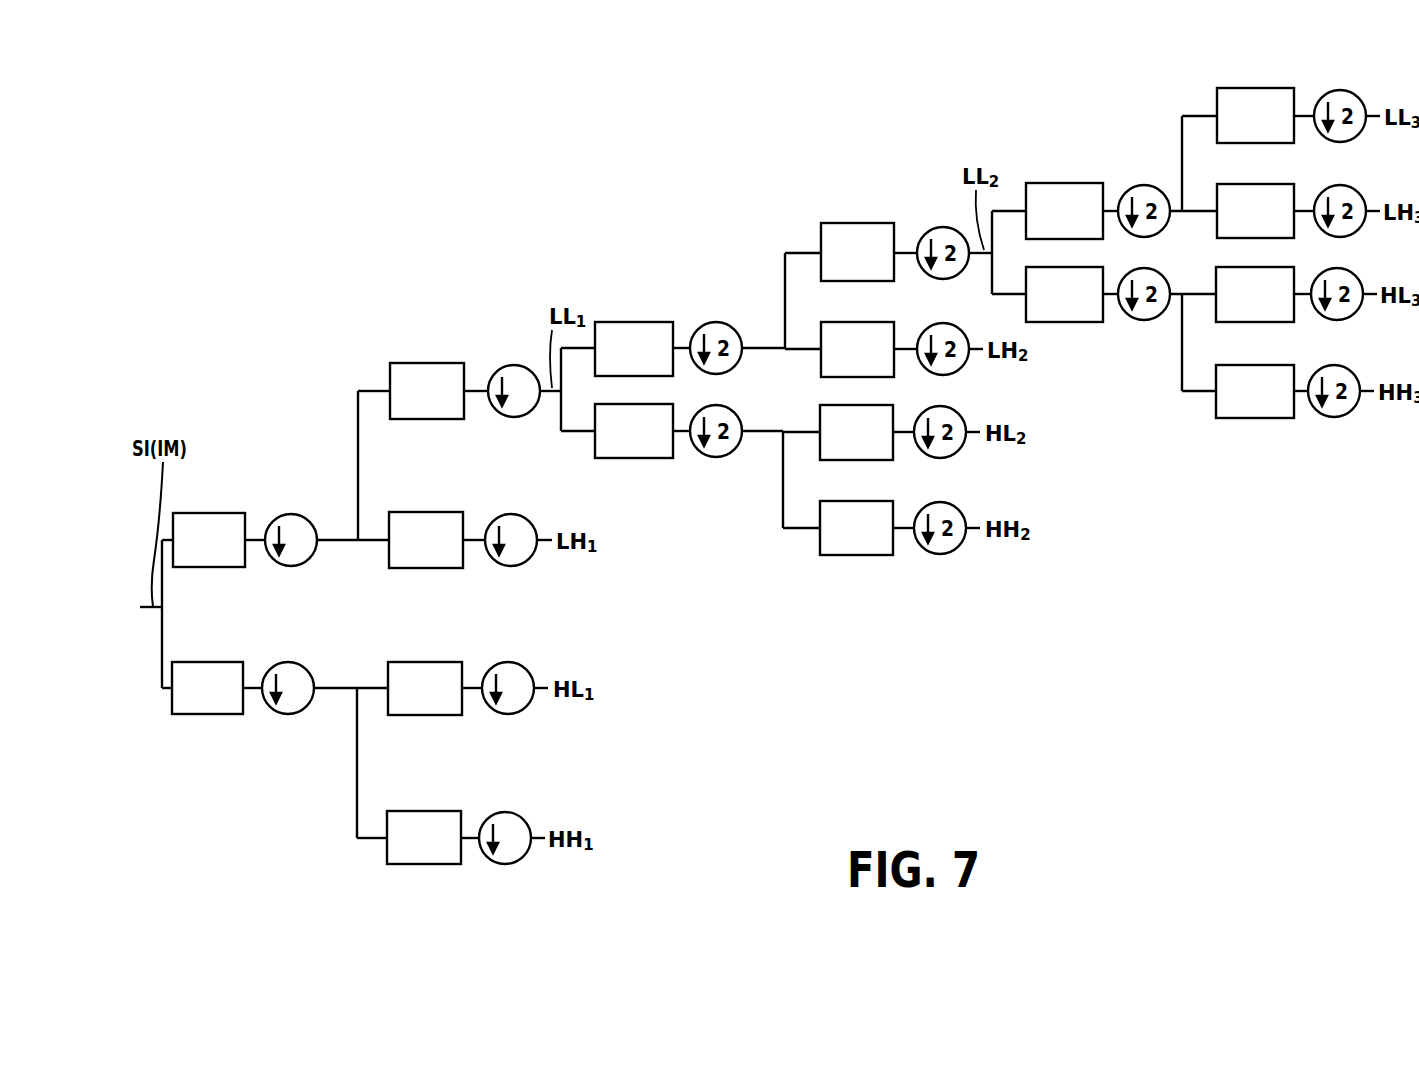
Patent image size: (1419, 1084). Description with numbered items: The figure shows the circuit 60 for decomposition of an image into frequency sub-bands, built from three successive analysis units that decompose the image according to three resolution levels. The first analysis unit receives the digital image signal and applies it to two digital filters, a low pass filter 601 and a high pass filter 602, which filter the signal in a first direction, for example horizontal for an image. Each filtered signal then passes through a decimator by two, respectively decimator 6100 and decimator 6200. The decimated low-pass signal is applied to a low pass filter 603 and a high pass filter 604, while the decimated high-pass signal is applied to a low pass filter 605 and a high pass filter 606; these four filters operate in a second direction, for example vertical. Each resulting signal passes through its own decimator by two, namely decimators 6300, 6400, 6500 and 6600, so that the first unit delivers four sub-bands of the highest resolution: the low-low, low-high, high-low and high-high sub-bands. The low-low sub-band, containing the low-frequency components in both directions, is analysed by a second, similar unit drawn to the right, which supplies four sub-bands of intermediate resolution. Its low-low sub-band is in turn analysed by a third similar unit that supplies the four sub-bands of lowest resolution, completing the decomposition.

The circuit 60 is at (376, 208).
The low pass filter 601 is at (222, 513).
The high pass filter 602 is at (220, 662).
The low pass filter 603 is at (425, 363).
The high pass filter 604 is at (437, 512).
The low pass filter 605 is at (430, 662).
The high pass filter 606 is at (430, 811).
The decimator by two 6100 is at (300, 515).
The decimator by two 6200 is at (294, 663).
The decimator by two 6300 is at (510, 365).
The decimator by two 6400 is at (521, 516).
The decimator by two 6500 is at (516, 663).
The decimator by two 6600 is at (513, 813).